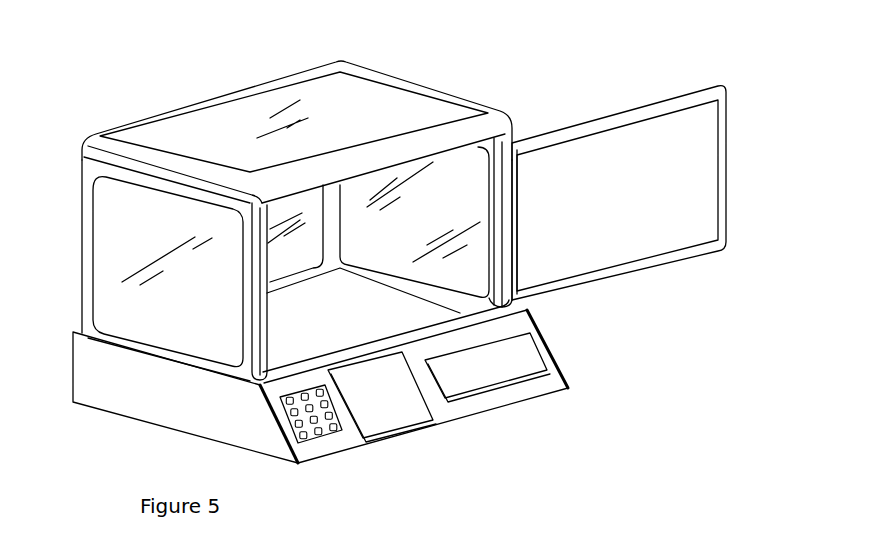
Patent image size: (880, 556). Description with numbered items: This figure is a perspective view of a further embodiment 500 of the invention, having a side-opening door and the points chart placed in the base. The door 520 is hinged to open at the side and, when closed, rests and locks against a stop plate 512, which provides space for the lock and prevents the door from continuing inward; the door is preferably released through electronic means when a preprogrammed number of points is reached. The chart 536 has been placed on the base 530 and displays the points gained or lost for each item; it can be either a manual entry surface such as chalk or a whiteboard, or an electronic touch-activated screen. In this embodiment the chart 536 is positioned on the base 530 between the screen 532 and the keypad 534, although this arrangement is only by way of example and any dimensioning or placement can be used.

The reward dispensing system 500 is at (515, 50).
The stop plate 512 is at (266, 338).
The door 520 is at (713, 189).
The base 530 is at (97, 390).
The screen 532 is at (447, 397).
The keypad 534 is at (340, 430).
The chart 536 is at (397, 422).